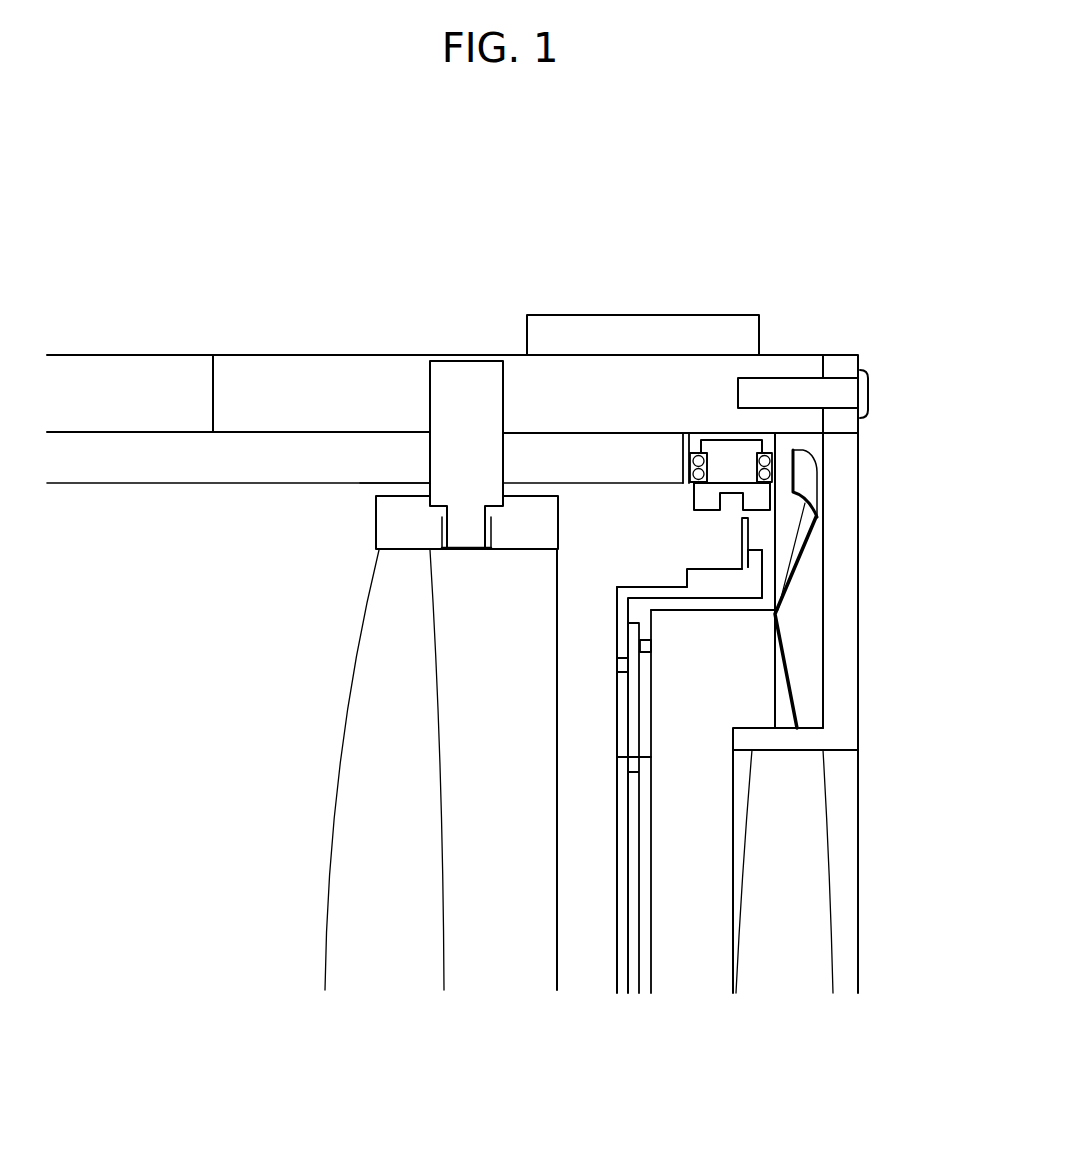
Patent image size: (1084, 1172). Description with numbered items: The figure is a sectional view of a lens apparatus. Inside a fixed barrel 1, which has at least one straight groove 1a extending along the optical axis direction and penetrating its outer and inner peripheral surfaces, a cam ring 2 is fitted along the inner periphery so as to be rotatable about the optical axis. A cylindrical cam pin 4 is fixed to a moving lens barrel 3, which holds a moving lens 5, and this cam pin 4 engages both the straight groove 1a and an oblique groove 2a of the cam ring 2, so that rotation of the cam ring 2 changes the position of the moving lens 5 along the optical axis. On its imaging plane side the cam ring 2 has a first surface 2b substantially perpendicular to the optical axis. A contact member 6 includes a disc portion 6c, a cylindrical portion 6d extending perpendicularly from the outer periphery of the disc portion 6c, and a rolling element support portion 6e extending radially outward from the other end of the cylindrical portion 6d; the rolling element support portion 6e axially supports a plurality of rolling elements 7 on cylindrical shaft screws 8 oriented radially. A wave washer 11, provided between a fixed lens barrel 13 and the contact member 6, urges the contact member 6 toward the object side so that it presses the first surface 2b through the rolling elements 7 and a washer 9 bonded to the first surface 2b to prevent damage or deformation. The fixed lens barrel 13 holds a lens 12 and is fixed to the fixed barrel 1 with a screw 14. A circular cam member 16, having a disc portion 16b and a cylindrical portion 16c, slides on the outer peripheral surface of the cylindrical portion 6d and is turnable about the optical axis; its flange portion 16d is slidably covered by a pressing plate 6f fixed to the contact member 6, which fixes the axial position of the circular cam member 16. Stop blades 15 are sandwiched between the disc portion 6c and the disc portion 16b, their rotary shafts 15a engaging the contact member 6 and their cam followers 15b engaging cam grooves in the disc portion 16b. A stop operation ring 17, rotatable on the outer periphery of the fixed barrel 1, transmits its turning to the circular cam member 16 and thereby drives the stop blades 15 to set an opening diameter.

The fixed barrel 1 is at (170, 380).
The straight groove 1a is at (320, 374).
The cam ring 2 is at (168, 470).
The oblique groove 2a is at (428, 458).
The first surface 2b is at (683, 442).
The moving lens barrel 3 is at (398, 520).
The cam pin 4 is at (468, 380).
The moving lens 5 is at (418, 948).
The contact member 6 is at (648, 968).
The disc portion 6c is at (650, 690).
The cylindrical portion 6d is at (690, 610).
The rolling element support portion 6e is at (763, 508).
The pressing plate 6f is at (742, 545).
The rolling elements 7 is at (790, 450).
The cylindrical shaft screws 8 is at (735, 440).
The washer 9 is at (688, 464).
The wave washer 11 is at (783, 601).
The lens 12 is at (747, 943).
The fixed lens barrel 13 is at (843, 470).
The screw 14 is at (853, 392).
The stop blades 15 is at (632, 737).
The rotary shafts 15a is at (648, 648).
The cam followers 15b is at (620, 665).
The circular cam member 16 is at (620, 968).
The disc portion 16b is at (618, 725).
The cylindrical portion 16c is at (665, 592).
The flange portion 16d is at (755, 565).
The stop operation ring 17 is at (658, 326).